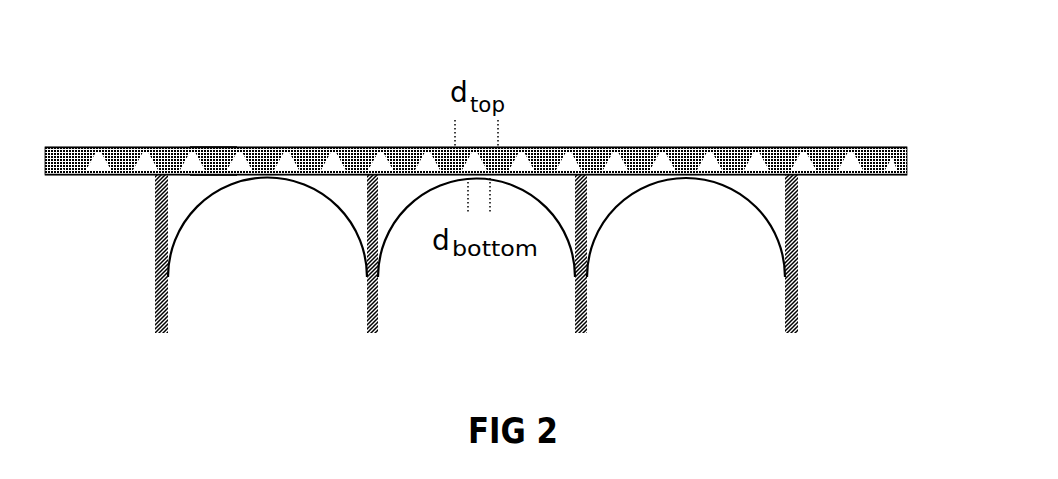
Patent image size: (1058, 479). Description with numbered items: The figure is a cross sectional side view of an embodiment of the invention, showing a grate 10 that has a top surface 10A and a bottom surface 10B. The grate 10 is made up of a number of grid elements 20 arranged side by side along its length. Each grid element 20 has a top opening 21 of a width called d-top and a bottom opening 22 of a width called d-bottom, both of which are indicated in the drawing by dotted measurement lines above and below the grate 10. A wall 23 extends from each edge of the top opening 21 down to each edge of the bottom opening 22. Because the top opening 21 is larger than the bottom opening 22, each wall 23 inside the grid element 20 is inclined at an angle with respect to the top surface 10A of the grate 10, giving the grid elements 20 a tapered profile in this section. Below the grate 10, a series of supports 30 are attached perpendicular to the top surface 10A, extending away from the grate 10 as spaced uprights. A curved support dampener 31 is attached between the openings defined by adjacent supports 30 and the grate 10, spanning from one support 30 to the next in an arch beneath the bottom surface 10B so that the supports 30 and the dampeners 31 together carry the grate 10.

The grate 10 is at (905, 158).
The top surface of the grate 10A is at (829, 131).
The bottom surface of the grate 10B is at (826, 187).
The grid element 20 is at (71, 145).
The top opening 21 is at (202, 147).
The bottom opening 22 is at (200, 177).
The wall 23 is at (342, 153).
The support 30 is at (168, 278).
The curved support dampener 31 is at (190, 200).